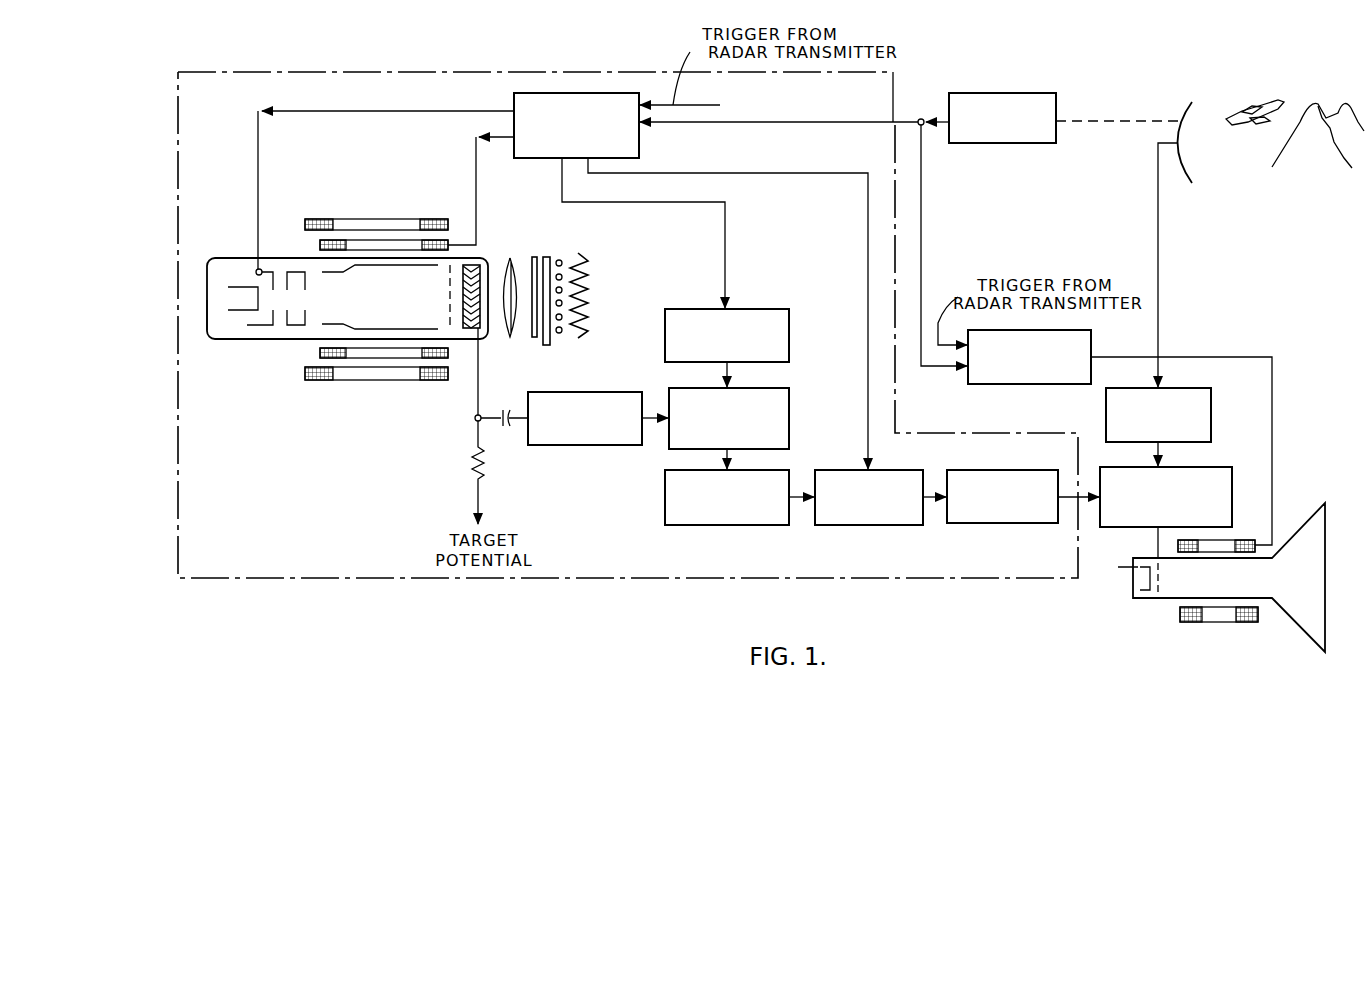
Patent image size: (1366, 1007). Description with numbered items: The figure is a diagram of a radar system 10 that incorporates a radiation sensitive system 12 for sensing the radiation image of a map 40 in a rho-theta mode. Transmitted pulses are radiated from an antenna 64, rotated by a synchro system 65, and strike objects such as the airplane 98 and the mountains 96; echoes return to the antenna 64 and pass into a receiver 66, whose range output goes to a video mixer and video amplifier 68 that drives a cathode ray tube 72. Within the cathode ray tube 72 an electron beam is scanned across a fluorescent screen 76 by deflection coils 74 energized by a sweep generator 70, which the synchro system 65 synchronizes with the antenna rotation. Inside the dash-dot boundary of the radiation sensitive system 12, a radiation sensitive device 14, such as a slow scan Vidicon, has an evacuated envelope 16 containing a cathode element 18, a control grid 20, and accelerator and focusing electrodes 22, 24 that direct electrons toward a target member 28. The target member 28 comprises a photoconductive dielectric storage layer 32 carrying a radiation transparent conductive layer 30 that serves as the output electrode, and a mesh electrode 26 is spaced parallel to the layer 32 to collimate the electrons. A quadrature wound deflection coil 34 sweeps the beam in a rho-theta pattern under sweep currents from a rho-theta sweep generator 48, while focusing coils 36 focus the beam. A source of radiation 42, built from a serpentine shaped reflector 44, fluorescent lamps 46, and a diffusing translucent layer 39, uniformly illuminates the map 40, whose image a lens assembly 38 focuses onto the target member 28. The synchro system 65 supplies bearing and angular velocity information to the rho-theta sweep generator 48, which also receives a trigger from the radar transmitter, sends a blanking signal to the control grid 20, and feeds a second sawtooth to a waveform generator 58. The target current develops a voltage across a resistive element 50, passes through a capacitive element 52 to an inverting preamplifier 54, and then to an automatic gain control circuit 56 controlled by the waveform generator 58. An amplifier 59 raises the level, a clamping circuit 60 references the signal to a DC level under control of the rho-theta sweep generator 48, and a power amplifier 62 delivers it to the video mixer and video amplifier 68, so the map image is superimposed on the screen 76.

The radar system 10 is at (686, 612).
The radiation sensitive system 12 is at (462, 71).
The radiation sensitive device 14 is at (212, 251).
The evacuated envelope 16 is at (263, 342).
The cathode element 18 is at (241, 312).
The control grid 20 is at (256, 272).
The accelerator and focusing electrode 22 is at (308, 318).
The accelerator and focusing electrode 24 is at (330, 330).
The mesh electrode 26 is at (448, 284).
The target member 28 is at (481, 262).
The radiation transparent layer 30 is at (479, 330).
The layer of dielectric storage material 32 is at (470, 330).
The deflection yoke or coil 34 is at (320, 245).
The focusing coils 36 is at (306, 220).
The lens assembly 38 is at (512, 262).
The layer of translucent material 39 is at (549, 256).
The map 40 is at (535, 338).
The source of radiation 42 is at (579, 364).
The serpentine shaped reflector 44 is at (589, 270).
The lamps 46 is at (560, 260).
The rho-theta sweep generator 48 is at (514, 95).
The resistive element 50 is at (472, 462).
The capacitive element 52 is at (506, 412).
The preamplifier 54 is at (577, 446).
The automatic gain control circuit 56 is at (790, 420).
The waveform generator 58 is at (790, 332).
The amplifier 59 is at (665, 486).
The clamping circuit 60 is at (849, 470).
The power amplifier 62 is at (987, 470).
The antenna 64 is at (1185, 113).
The synchro system 65 is at (1010, 93).
The receiver 66 is at (1190, 388).
The video mixer and video amplifier 68 is at (1217, 467).
The sweep generator 70 is at (1030, 384).
The cathode ray tube 72 is at (1312, 518).
The deflection coils 74 is at (1243, 622).
The fluorescent screen 76 is at (1328, 524).
The mountains 96 is at (1322, 100).
The airplane 98 is at (1260, 103).